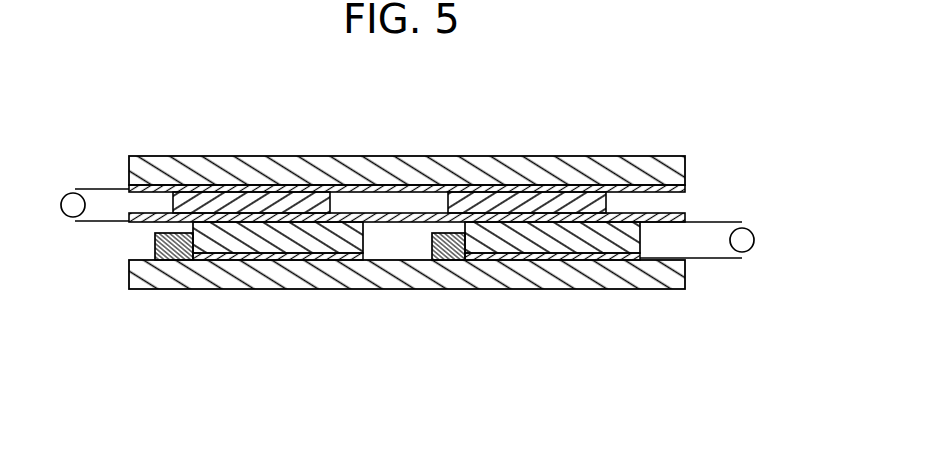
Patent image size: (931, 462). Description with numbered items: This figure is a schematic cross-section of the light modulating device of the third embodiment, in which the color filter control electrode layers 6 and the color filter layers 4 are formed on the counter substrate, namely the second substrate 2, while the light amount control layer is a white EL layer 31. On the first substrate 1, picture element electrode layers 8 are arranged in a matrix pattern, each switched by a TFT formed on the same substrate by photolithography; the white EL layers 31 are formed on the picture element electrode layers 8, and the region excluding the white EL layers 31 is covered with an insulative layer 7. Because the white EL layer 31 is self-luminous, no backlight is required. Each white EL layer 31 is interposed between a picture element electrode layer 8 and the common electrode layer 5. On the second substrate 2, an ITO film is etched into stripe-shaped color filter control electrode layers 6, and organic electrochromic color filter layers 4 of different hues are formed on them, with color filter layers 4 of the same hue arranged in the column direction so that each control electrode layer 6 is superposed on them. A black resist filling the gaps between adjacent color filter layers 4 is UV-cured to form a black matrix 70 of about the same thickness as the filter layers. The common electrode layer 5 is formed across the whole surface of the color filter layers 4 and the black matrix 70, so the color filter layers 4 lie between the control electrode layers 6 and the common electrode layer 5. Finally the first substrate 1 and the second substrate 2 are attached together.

The first substrate 1 is at (135, 275).
The second substrate 2 is at (152, 168).
The color filter layer 4 is at (255, 212).
The common electrode layer 5 is at (638, 210).
The color filter control electrode layer 6 is at (292, 188).
The insulative layer 7 is at (377, 236).
The picture element electrode layer 8 is at (317, 259).
The white EL layer 31 is at (277, 233).
The black matrix 70 is at (670, 202).
The element TFT is at (175, 261).